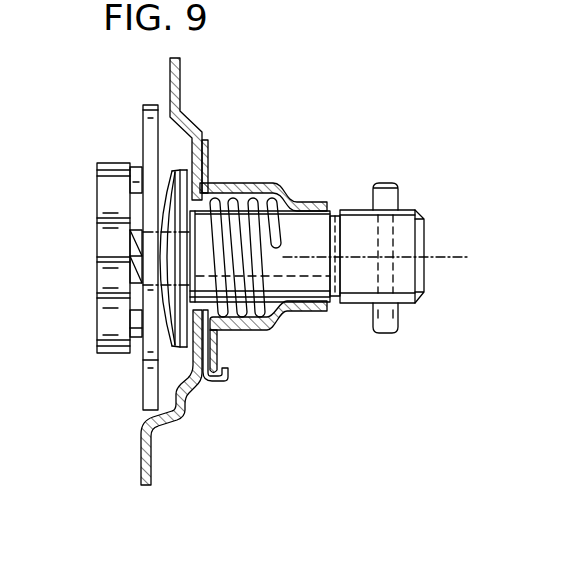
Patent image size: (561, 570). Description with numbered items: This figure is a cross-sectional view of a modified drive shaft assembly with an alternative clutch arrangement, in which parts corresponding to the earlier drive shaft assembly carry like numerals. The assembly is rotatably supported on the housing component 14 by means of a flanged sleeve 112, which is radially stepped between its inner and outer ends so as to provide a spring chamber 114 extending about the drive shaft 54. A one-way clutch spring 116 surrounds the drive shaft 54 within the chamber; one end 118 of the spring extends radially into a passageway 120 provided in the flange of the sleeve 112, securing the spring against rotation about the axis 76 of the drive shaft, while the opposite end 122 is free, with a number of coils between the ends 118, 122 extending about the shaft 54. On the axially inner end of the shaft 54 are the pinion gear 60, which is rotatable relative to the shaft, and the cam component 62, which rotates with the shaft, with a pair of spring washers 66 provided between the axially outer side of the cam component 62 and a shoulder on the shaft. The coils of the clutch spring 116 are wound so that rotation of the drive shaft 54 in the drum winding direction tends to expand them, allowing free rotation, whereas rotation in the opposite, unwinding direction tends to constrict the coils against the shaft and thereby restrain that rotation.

The housing component 14 is at (179, 84).
The drive shaft 54 is at (349, 199).
The pinion gear 60 is at (97, 325).
The cam component 62 is at (145, 386).
The spring washers 66 is at (182, 169).
The axis 76 is at (443, 257).
The flanged sleeve 112 is at (247, 188).
The spring chamber 114 is at (223, 193).
The one-way clutch spring 116 is at (250, 318).
The spring end 118 is at (205, 381).
The passageway 120 is at (217, 357).
The opposite spring end 122 is at (281, 241).